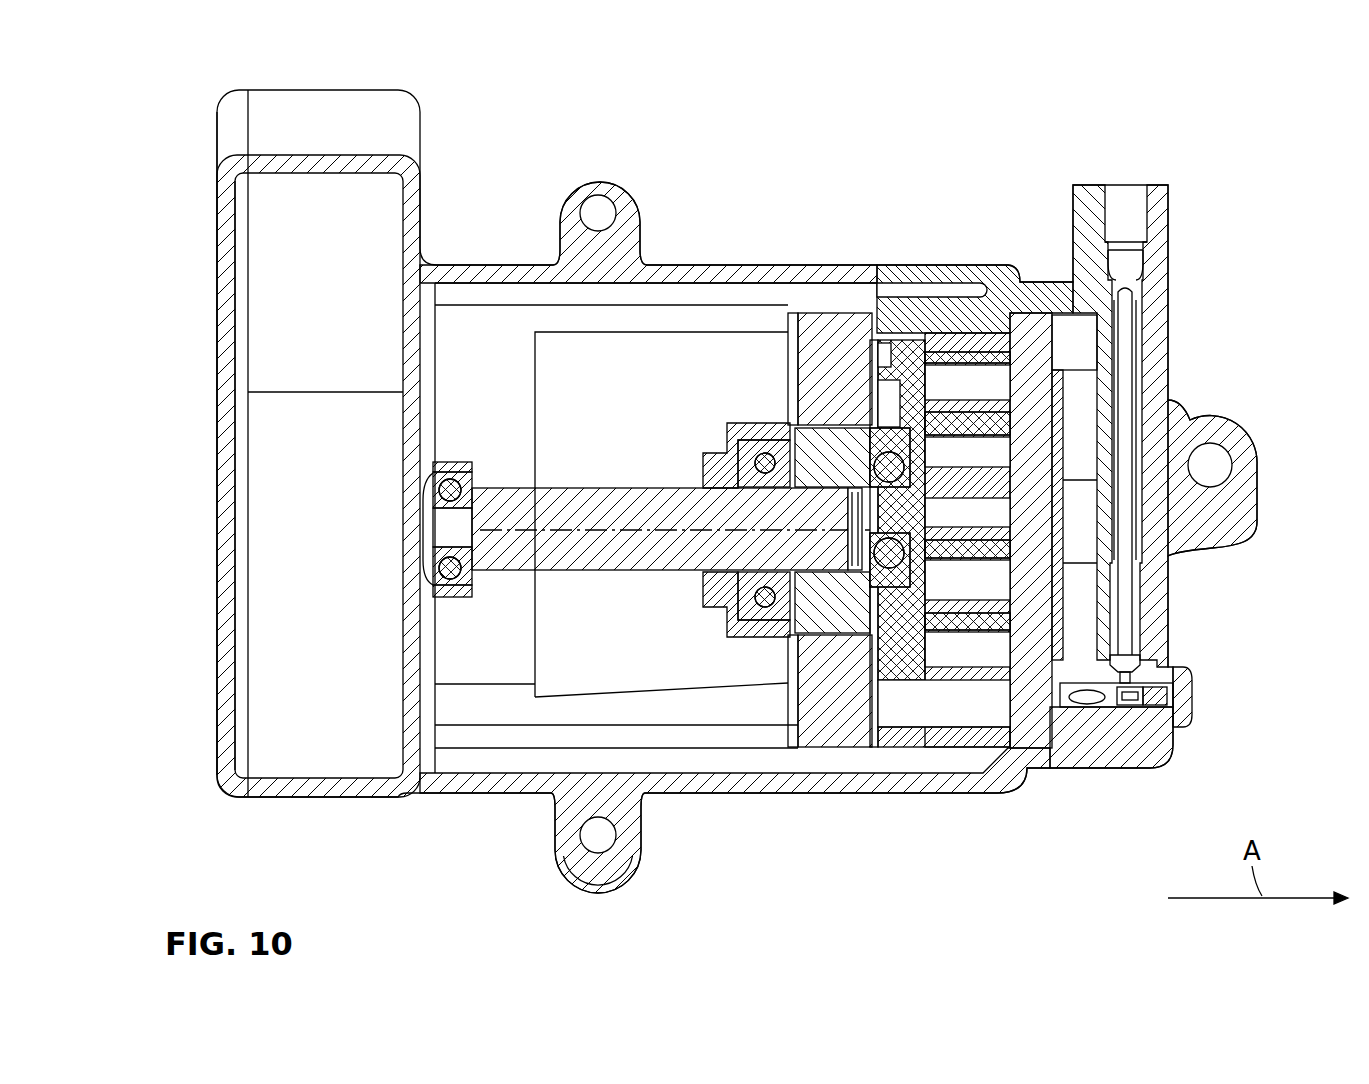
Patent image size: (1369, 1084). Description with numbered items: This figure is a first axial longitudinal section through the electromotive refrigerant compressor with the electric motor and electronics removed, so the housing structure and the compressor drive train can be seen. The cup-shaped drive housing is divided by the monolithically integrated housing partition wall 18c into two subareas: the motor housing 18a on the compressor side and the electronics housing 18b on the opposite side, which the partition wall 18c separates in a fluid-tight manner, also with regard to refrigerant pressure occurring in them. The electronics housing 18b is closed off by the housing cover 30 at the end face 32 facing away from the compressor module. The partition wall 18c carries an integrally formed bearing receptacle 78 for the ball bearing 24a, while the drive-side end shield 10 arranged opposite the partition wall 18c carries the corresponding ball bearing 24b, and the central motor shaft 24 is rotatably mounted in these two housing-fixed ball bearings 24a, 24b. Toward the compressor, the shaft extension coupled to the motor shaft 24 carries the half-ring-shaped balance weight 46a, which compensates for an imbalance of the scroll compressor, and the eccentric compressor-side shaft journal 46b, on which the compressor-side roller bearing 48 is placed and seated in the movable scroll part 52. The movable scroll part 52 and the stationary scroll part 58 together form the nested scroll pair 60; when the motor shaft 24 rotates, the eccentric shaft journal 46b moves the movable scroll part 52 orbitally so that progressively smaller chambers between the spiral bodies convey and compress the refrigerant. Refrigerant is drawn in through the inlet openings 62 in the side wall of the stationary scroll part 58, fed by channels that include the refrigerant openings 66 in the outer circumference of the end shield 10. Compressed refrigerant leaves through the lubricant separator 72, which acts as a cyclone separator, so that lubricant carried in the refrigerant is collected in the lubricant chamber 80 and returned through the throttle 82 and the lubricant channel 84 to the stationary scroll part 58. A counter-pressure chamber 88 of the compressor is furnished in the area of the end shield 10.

The end shield 10 is at (820, 675).
The motor housing 18a is at (722, 368).
The electronics housing 18b is at (315, 647).
The housing partition wall 18c is at (410, 373).
The motor shaft 24 is at (592, 552).
The ball bearing 24a is at (477, 481).
The ball bearing 24b is at (735, 608).
The housing cover 30 is at (225, 497).
The end face 32 is at (217, 428).
The balance weight 46a is at (847, 607).
The shaft journal 46b is at (878, 515).
The roller bearing 48 is at (903, 461).
The movable scroll part 52 is at (992, 360).
The stationary scroll part 58 is at (938, 327).
The scroll pair 60 is at (1021, 395).
The inlet opening 62 is at (915, 290).
The refrigerant opening 66 is at (838, 302).
The lubricant separator 72 is at (1127, 345).
The bearing receptacle 78 is at (447, 598).
The lubricant chamber 80 is at (1123, 620).
The throttle 82 is at (1097, 707).
The lubricant channel 84 is at (975, 737).
The counter-pressure chamber 88 is at (853, 543).